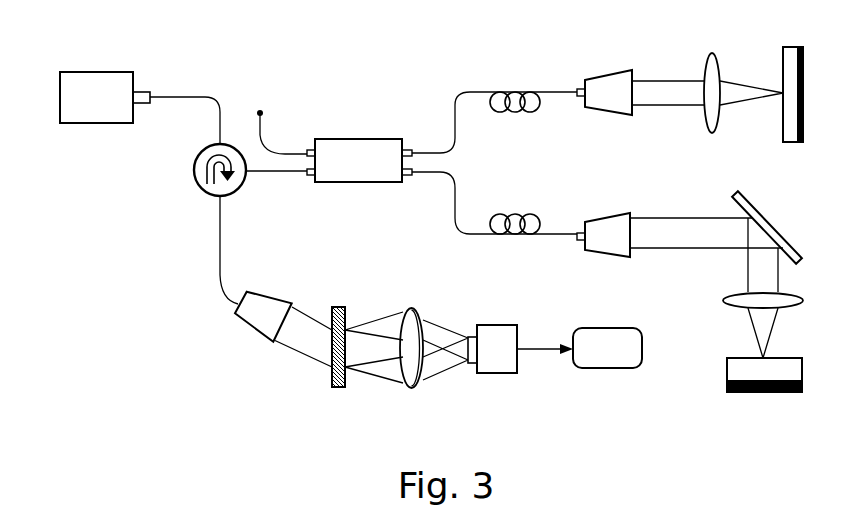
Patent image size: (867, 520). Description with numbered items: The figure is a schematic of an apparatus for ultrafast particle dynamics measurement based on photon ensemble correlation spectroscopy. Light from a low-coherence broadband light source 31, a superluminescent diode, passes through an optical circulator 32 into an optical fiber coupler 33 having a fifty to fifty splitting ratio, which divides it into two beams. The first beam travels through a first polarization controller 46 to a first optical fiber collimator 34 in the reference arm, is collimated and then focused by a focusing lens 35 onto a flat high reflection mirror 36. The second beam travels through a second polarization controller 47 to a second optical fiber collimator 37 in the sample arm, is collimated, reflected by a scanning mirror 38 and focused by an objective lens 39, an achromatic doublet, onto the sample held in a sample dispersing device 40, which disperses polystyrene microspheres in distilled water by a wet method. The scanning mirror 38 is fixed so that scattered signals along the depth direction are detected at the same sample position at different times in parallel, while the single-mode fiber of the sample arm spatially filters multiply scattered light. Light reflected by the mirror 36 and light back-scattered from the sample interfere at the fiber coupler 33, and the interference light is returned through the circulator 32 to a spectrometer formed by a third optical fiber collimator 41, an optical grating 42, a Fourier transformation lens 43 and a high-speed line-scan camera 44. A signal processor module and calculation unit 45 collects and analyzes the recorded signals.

The low-coherence broadband light source 31 is at (105, 97).
The optical circulator 32 is at (200, 177).
The optical fiber coupler 33 is at (359, 160).
The first optical fiber collimator 34 is at (604, 92).
The focusing lens 35 is at (711, 75).
The flat high reflection mirror 36 is at (790, 77).
The second optical fiber collimator 37 is at (603, 235).
The scanning mirror 38 is at (772, 227).
The objective lens 39 is at (744, 310).
The sample dispersing device 40 is at (764, 392).
The third optical fiber collimator 41 is at (263, 317).
The optical grating 42 is at (335, 366).
The Fourier transformation lens 43 is at (412, 367).
The high-speed line-scan camera 44 is at (492, 349).
The signal processor module and calculation unit 45 is at (607, 348).
The first polarization controller 46 is at (515, 85).
The second polarization controller 47 is at (515, 208).